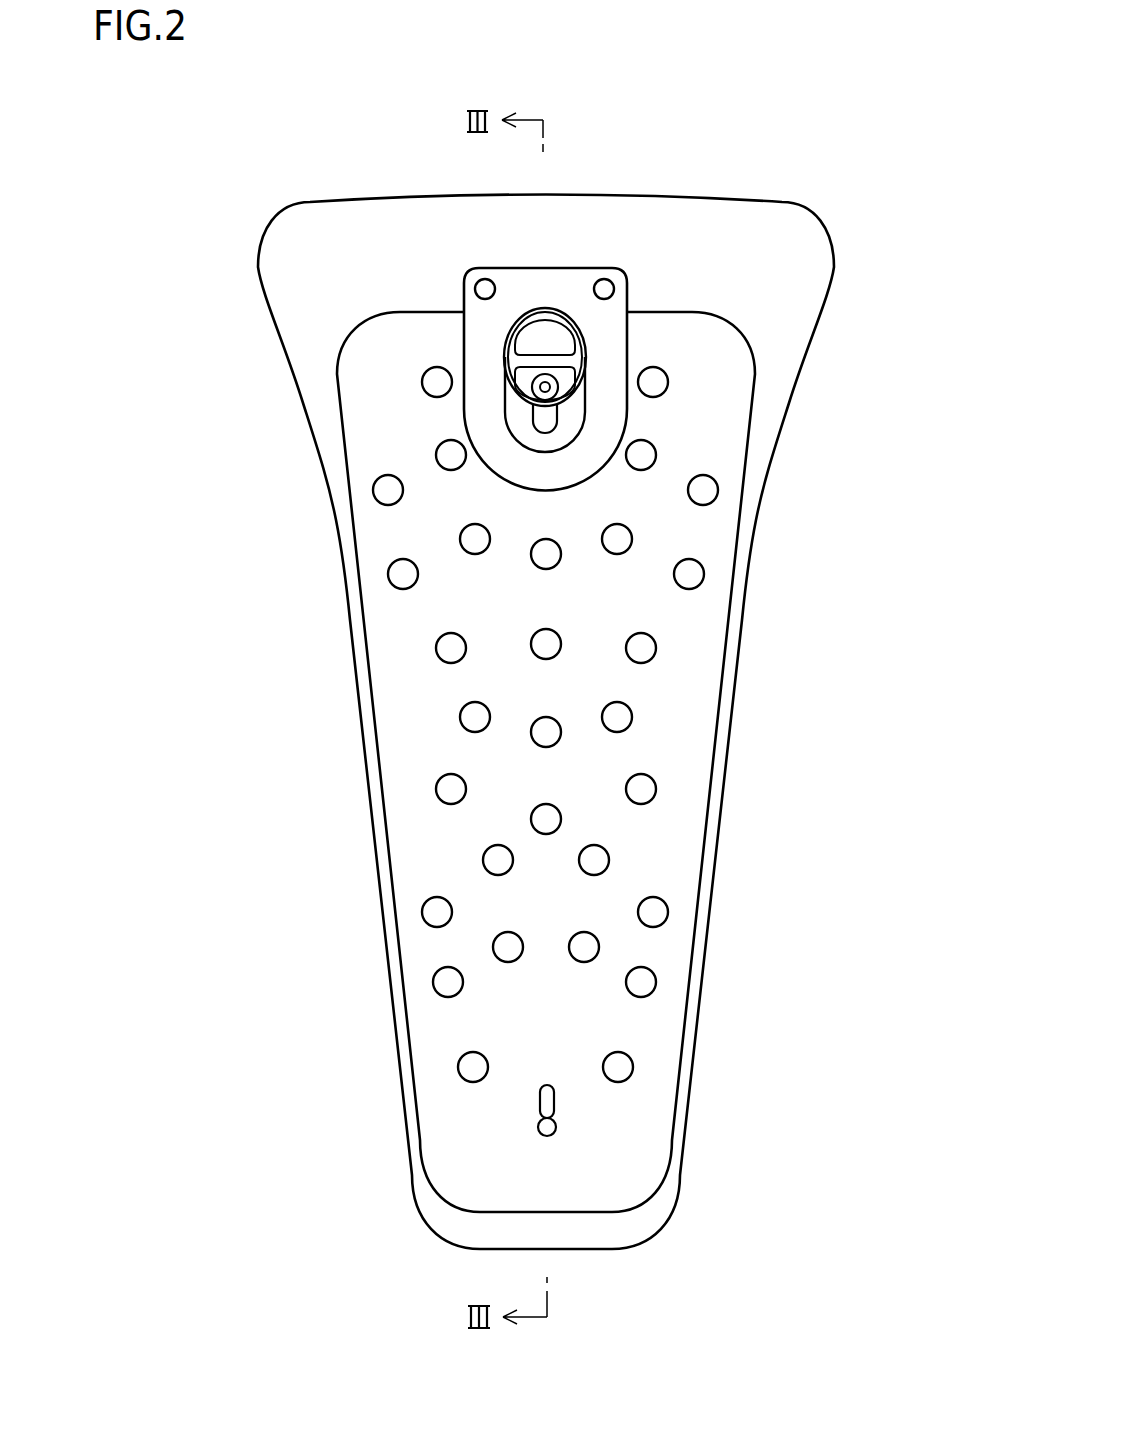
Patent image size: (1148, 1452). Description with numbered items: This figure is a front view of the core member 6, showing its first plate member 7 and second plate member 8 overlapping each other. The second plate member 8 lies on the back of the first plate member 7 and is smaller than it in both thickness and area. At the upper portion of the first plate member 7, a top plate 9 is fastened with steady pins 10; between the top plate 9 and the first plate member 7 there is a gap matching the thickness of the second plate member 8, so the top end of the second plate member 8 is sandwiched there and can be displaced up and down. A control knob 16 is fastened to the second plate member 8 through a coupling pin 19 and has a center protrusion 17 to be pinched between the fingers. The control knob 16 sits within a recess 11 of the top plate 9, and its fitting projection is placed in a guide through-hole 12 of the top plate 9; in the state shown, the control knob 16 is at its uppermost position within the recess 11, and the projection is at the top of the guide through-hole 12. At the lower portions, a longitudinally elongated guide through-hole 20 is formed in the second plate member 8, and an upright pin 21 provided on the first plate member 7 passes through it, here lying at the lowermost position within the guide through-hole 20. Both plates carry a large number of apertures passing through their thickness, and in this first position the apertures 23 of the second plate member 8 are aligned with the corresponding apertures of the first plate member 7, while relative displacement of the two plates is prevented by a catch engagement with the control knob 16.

The core member 6 is at (248, 182).
The first plate member 7 is at (328, 277).
The second plate member 8 is at (415, 688).
The top plate 9 is at (482, 343).
The steady pins 10 is at (485, 285).
The recess 11 is at (573, 405).
The guide through-hole 12 is at (557, 425).
The control knob 16 is at (577, 322).
The center protrusion 17 is at (545, 360).
The coupling pin 19 is at (533, 392).
The guide through-hole 20 is at (538, 1098).
The upright pin 21 is at (538, 1128).
The apertures 23 is at (373, 491).